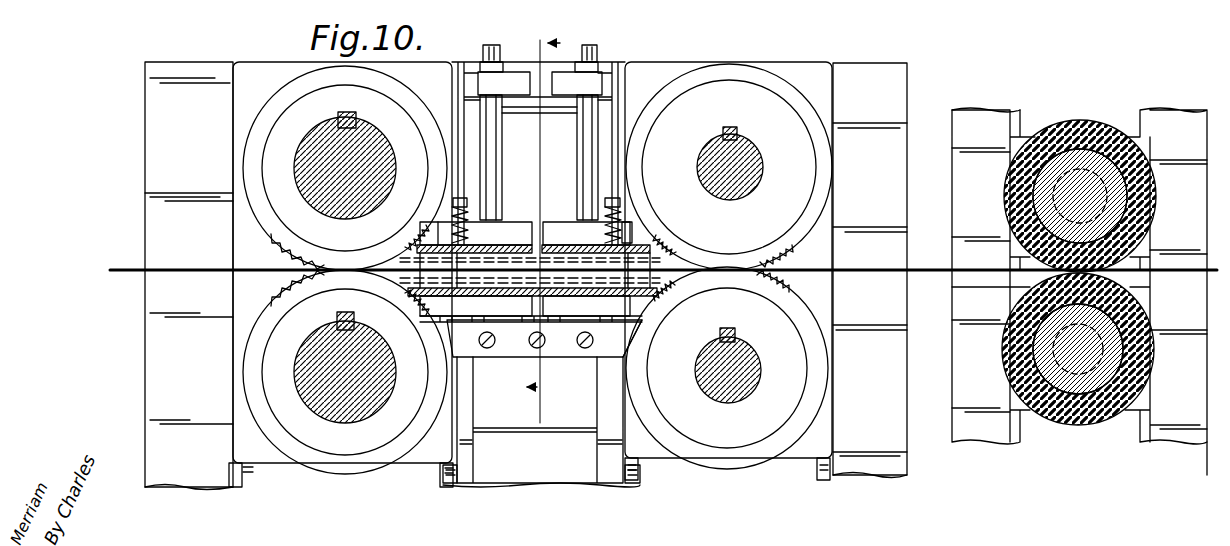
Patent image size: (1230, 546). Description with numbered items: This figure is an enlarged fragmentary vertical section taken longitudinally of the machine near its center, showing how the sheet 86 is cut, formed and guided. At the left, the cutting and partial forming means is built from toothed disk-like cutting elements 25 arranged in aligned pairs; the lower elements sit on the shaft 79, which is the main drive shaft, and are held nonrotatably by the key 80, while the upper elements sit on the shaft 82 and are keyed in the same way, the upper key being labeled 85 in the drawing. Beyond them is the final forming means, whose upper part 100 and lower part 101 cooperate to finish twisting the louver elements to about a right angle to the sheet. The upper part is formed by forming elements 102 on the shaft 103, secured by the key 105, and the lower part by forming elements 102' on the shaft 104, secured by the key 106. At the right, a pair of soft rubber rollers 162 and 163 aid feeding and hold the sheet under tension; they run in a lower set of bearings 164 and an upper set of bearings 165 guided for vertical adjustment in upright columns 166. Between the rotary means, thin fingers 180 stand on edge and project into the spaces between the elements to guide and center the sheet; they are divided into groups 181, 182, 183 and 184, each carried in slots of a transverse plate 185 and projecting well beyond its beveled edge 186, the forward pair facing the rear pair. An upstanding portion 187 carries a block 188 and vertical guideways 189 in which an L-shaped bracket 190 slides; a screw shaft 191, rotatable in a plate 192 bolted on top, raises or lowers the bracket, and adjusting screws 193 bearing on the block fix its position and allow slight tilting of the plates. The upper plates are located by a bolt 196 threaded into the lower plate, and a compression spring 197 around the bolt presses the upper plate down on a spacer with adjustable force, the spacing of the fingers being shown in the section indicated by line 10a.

The cutting elements 25 is at (267, 120).
The shaft 79 is at (318, 393).
The key 80 is at (337, 320).
The shaft 82 is at (380, 150).
The upper shaft key 85 is at (343, 117).
The sheet 86 is at (130, 268).
The upper part of final forming means 100 is at (803, 83).
The lower part of final forming means 101 is at (802, 445).
The forming elements 102 is at (729, 150).
The forming elements 102' is at (750, 368).
The shaft 103 is at (700, 147).
The shaft 104 is at (748, 380).
The key 105 is at (733, 127).
The key 106 is at (737, 332).
The section line 10a is at (543, 226).
The soft rubber roller 162 is at (1093, 423).
The soft rubber roller 163 is at (1105, 125).
The lower set of bearings 164 is at (1020, 400).
The upper set of bearings 165 is at (1023, 137).
The upright columns 166 is at (953, 430).
The fingers 180 is at (277, 283).
The group of fingers 181 is at (517, 282).
The group of fingers 182 is at (476, 234).
The group of fingers 183 is at (555, 280).
The group of fingers 184 is at (586, 233).
The plate 185 is at (475, 260).
The beveled edge 186 is at (273, 243).
The upstanding portion 187 is at (557, 112).
The block 188 is at (480, 353).
The vertical guideways 189 is at (498, 157).
The L-shaped bracket 190 is at (633, 233).
The screw shaft 191 is at (587, 120).
The plate 192 is at (578, 83).
The adjusting screws 193 is at (545, 318).
The bolt 196 is at (465, 200).
The compression spring 197 is at (500, 222).